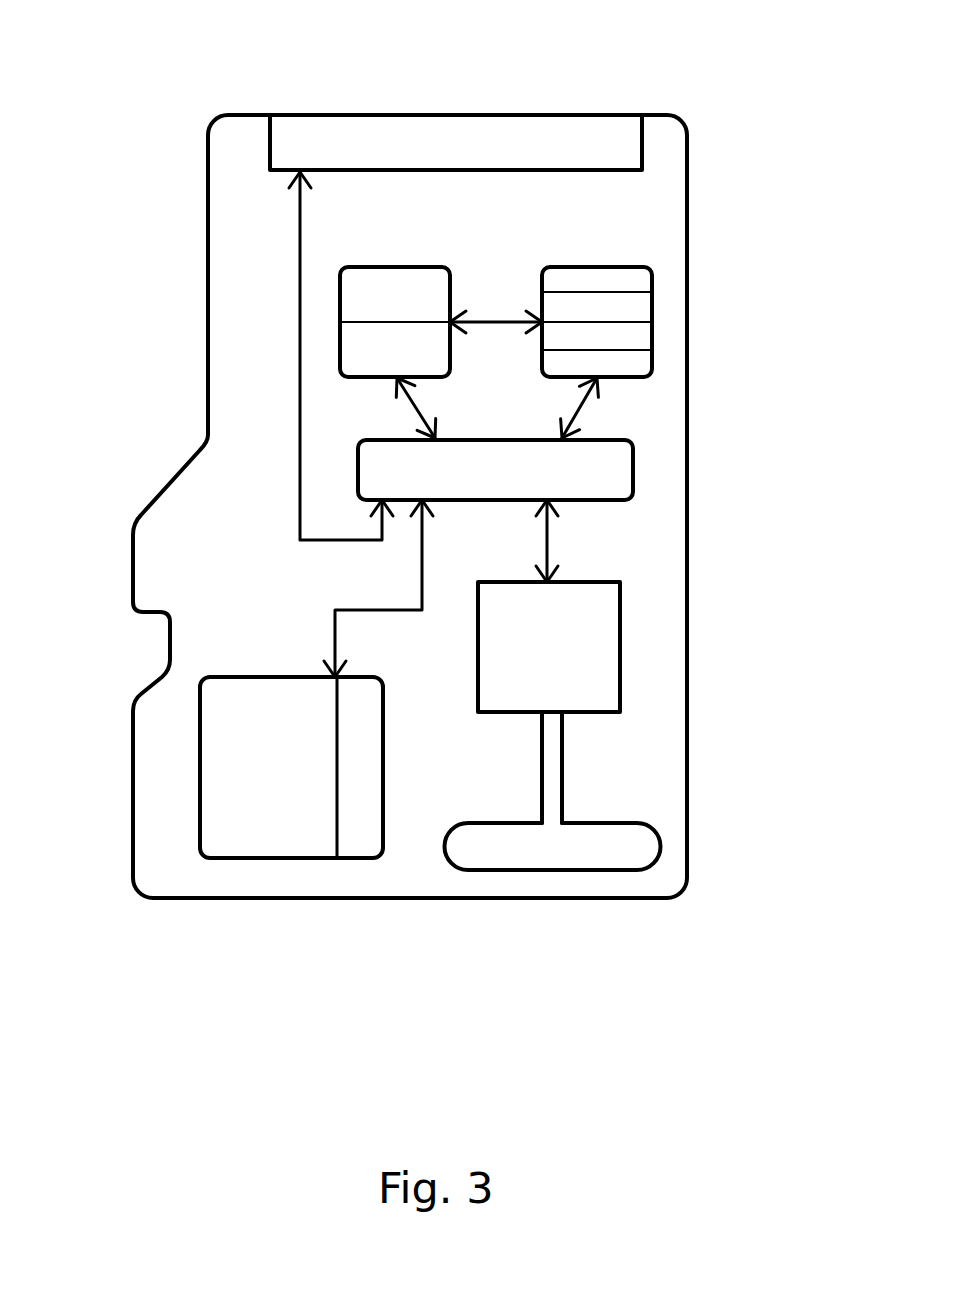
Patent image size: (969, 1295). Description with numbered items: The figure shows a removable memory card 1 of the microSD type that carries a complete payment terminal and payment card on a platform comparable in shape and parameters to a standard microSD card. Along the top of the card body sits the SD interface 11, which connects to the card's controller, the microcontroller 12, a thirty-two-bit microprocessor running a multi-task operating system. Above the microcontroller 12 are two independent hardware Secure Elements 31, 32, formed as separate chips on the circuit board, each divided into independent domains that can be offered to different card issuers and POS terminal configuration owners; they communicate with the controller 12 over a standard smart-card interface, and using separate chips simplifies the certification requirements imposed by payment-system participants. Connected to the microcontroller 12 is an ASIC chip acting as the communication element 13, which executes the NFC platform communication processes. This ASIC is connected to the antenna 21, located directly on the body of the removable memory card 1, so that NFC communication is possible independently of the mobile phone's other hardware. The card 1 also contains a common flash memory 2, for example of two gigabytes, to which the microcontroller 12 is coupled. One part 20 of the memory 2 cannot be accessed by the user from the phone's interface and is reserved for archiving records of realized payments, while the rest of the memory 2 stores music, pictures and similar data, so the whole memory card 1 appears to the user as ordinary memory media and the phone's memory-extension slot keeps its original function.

The removable memory card 1 is at (655, 193).
The SD interface 11 is at (420, 140).
The Secure Element 31 is at (455, 268).
The Secure Element 32 is at (653, 305).
The microcontroller 12 is at (567, 472).
The communication element 13 is at (578, 673).
The antenna 21 is at (597, 852).
The flash memory 2 is at (279, 813).
The part of the memory 20 is at (357, 830).